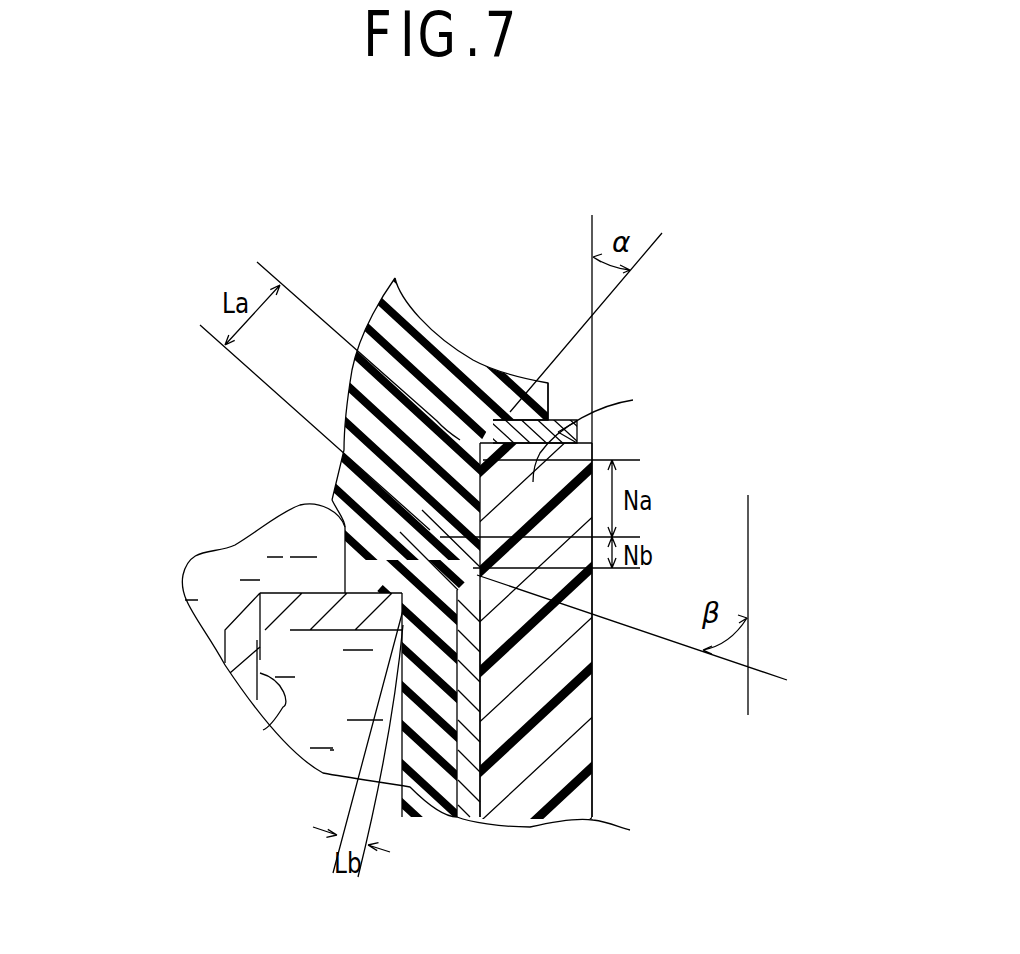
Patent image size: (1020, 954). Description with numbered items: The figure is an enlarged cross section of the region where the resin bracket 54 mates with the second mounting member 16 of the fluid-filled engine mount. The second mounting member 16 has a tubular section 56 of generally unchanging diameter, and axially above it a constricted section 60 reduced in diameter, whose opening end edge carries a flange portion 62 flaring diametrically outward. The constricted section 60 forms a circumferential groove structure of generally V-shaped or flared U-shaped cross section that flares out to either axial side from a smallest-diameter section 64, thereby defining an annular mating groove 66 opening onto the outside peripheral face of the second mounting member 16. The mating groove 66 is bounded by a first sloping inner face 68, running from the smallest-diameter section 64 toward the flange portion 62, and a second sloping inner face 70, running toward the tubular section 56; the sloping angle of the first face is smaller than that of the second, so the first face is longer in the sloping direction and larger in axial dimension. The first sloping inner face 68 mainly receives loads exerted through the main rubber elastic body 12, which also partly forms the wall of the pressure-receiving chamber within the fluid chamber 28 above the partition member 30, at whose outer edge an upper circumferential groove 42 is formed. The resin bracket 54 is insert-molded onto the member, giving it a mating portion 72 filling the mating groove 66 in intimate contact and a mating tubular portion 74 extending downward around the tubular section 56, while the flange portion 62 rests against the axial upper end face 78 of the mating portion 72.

The main rubber elastic body 12 is at (430, 357).
The second mounting member 16 is at (495, 752).
The fluid chamber 28 is at (227, 577).
The partition member 30 is at (237, 650).
The upper circumferential groove 42 is at (273, 728).
The resin bracket 54 is at (604, 587).
The tubular section 56 is at (478, 698).
The constricted section 60 is at (365, 500).
The flange portion 62 is at (577, 432).
The smallest-diameter section 64 is at (391, 495).
The mating groove 66 is at (601, 429).
The first sloping inner face 68 is at (458, 468).
The second sloping inner face 70 is at (395, 580).
The mating portion 72 is at (370, 553).
The mating tubular portion 74 is at (570, 718).
The axial upper end face 78 is at (530, 400).